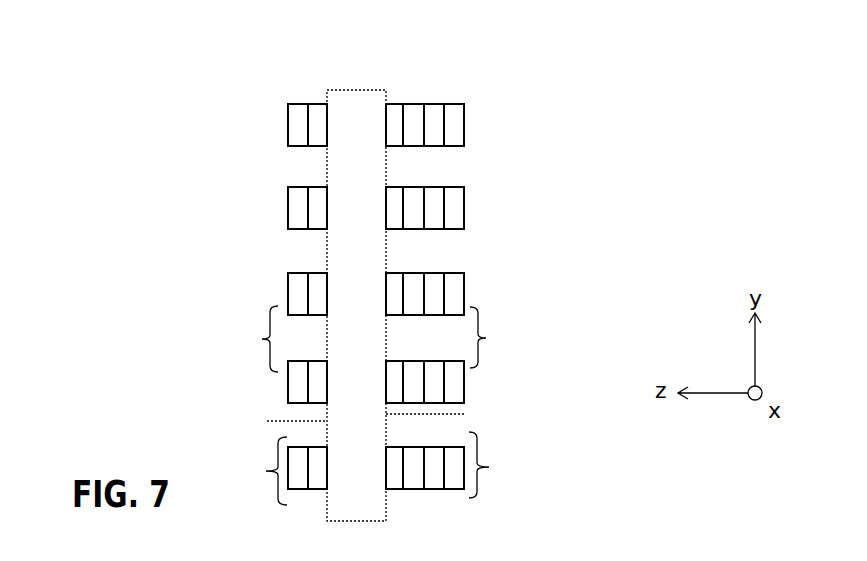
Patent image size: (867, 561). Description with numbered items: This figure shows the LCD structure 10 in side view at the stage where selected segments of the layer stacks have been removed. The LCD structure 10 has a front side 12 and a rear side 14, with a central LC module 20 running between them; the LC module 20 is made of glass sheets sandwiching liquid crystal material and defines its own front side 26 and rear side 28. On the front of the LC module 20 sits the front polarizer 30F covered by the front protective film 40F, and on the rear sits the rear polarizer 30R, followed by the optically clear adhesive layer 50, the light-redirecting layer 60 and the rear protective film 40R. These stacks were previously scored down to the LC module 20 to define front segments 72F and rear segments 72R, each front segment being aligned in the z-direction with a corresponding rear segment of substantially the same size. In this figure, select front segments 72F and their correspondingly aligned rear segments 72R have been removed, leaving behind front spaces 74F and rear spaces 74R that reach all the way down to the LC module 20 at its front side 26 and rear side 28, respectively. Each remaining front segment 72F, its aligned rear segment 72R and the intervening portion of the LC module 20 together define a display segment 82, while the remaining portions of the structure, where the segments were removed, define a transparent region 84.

The LCD structure 10 is at (170, 56).
The front side 12 is at (128, 210).
The rear side 14 is at (607, 211).
The LC module 20 is at (357, 90).
The front side of LC module 26 is at (267, 421).
The rear side of LC module 28 is at (465, 414).
The front polarizer 30F is at (247, 255).
The rear polarizer 30R is at (395, 103).
The front protective film 40F is at (318, 103).
The rear protective film 40R is at (458, 103).
The optically clear adhesive layer 50 is at (415, 103).
The light-redirecting layer 60 is at (434, 103).
The front segments 72F is at (272, 380).
The rear segments 72R is at (474, 380).
The front spaces 74F is at (307, 250).
The rear spaces 74R is at (440, 252).
The display segment 82 is at (393, 468).
The transparent region 84 is at (390, 339).